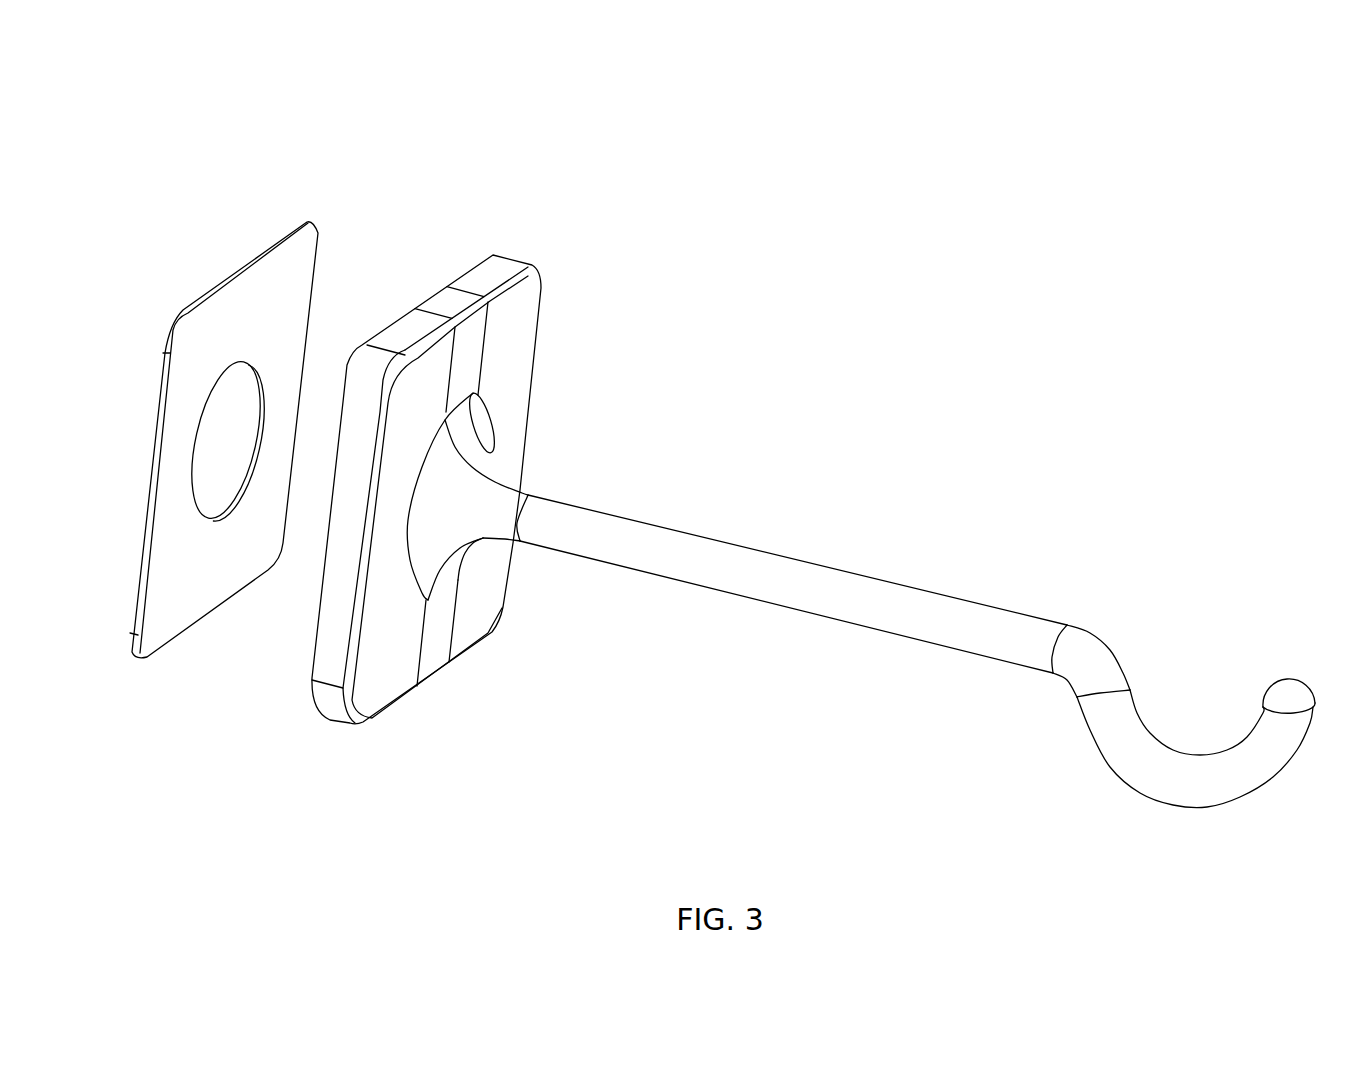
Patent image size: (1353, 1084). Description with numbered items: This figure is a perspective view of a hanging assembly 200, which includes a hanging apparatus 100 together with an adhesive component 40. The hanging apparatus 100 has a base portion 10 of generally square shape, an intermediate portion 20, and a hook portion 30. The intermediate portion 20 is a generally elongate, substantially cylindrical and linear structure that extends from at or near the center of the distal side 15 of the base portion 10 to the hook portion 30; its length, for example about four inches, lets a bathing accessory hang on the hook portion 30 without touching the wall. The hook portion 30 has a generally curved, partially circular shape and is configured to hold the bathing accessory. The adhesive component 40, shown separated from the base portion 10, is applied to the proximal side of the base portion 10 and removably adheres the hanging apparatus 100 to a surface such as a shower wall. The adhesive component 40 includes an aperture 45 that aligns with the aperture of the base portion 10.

The hanging assembly 200 is at (974, 193).
The hanging apparatus 100 is at (1062, 368).
The base portion 10 is at (284, 759).
The distal side 15 is at (505, 333).
The intermediate portion 20 is at (810, 460).
The hook portion 30 is at (1224, 614).
The adhesive component 40 is at (137, 655).
The aperture 45 is at (260, 403).